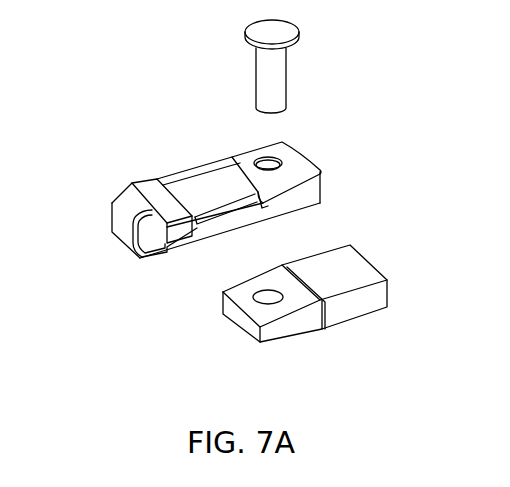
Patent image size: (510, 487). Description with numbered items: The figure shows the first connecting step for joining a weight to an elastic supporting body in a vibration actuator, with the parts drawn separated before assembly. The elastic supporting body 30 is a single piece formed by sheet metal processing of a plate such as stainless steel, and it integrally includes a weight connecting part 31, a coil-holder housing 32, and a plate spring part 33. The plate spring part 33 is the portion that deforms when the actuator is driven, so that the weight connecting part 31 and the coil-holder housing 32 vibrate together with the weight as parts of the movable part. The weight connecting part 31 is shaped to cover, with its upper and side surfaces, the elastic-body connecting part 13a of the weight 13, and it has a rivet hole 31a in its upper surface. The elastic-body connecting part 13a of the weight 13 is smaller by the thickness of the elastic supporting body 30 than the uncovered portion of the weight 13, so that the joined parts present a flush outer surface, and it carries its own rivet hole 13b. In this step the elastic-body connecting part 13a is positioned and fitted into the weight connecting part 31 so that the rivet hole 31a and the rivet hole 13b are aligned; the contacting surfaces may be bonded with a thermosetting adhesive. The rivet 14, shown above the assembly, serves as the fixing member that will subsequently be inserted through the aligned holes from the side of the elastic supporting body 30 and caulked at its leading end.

The weight 13 is at (387, 265).
The elastic-body connecting part 13a is at (290, 334).
The rivet hole 13b is at (223, 313).
The rivet 14 is at (278, 66).
The elastic supporting body 30 is at (203, 240).
The weight connecting part 31 is at (244, 152).
The rivet hole 31a is at (283, 152).
The coil-holder housing 32 is at (175, 174).
The plate spring part 33 is at (112, 228).